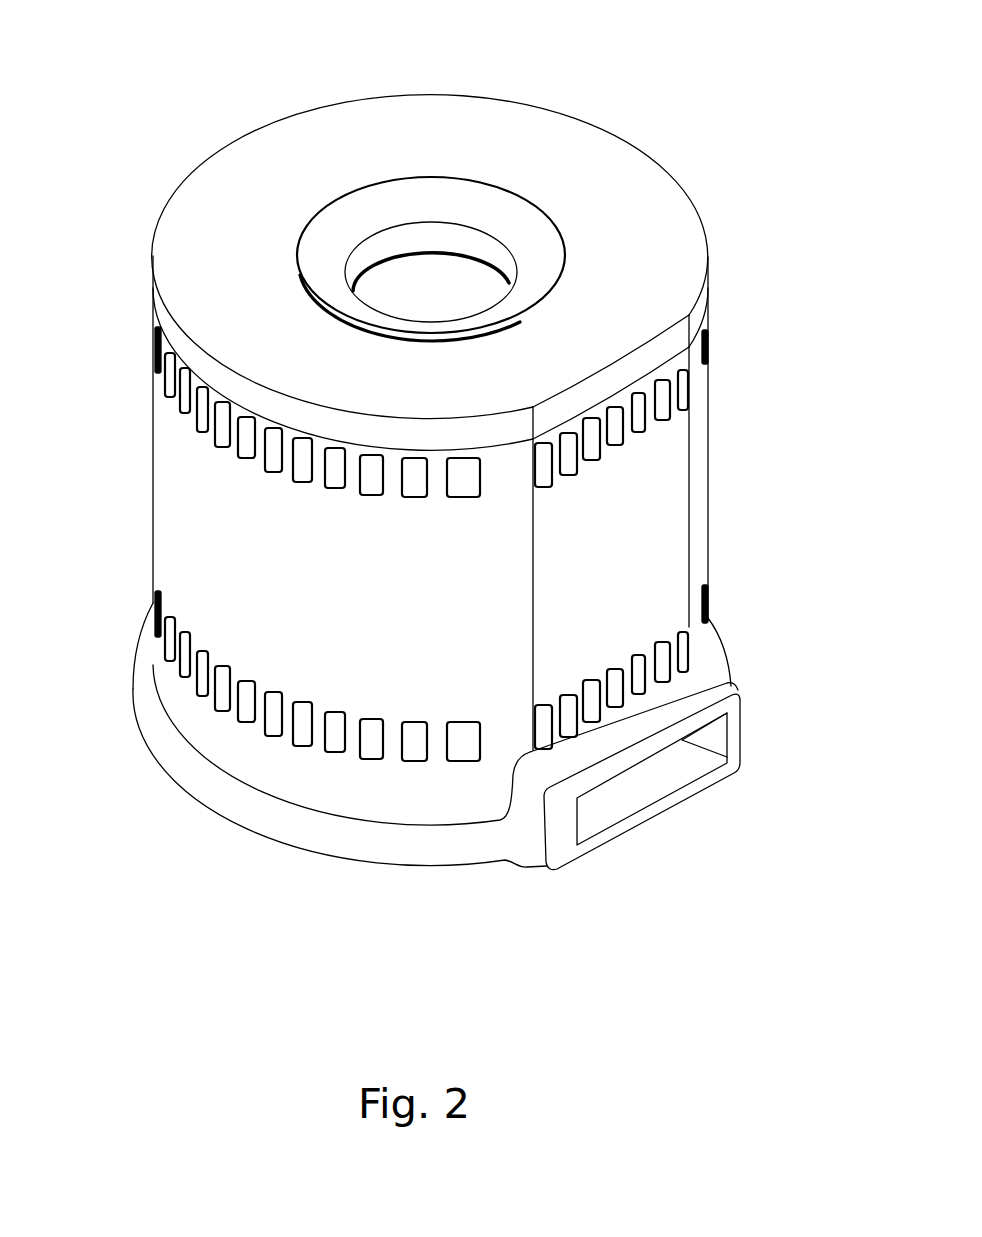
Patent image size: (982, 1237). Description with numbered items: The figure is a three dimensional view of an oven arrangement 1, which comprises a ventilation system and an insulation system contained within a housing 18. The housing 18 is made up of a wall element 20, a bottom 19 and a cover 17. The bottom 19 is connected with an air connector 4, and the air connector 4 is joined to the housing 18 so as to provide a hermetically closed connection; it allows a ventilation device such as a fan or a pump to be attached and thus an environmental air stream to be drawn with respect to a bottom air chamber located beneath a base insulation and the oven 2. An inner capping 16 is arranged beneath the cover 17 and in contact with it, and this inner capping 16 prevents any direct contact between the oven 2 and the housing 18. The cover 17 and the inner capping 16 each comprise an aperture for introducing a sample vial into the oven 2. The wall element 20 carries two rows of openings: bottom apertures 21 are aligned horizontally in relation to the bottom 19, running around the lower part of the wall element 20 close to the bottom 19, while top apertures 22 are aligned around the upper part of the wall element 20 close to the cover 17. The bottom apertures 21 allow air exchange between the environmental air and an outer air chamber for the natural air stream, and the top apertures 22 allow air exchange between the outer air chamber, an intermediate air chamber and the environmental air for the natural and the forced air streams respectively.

The oven arrangement 1 is at (211, 91).
The oven 2 is at (450, 293).
The air connector 4 is at (638, 790).
The inner capping 16 is at (438, 238).
The cover 17 is at (483, 137).
The housing 18 is at (726, 469).
The bottom 19 is at (197, 775).
The wall element 20 is at (660, 598).
The bottom apertures 21 is at (305, 727).
The top apertures 22 is at (637, 408).